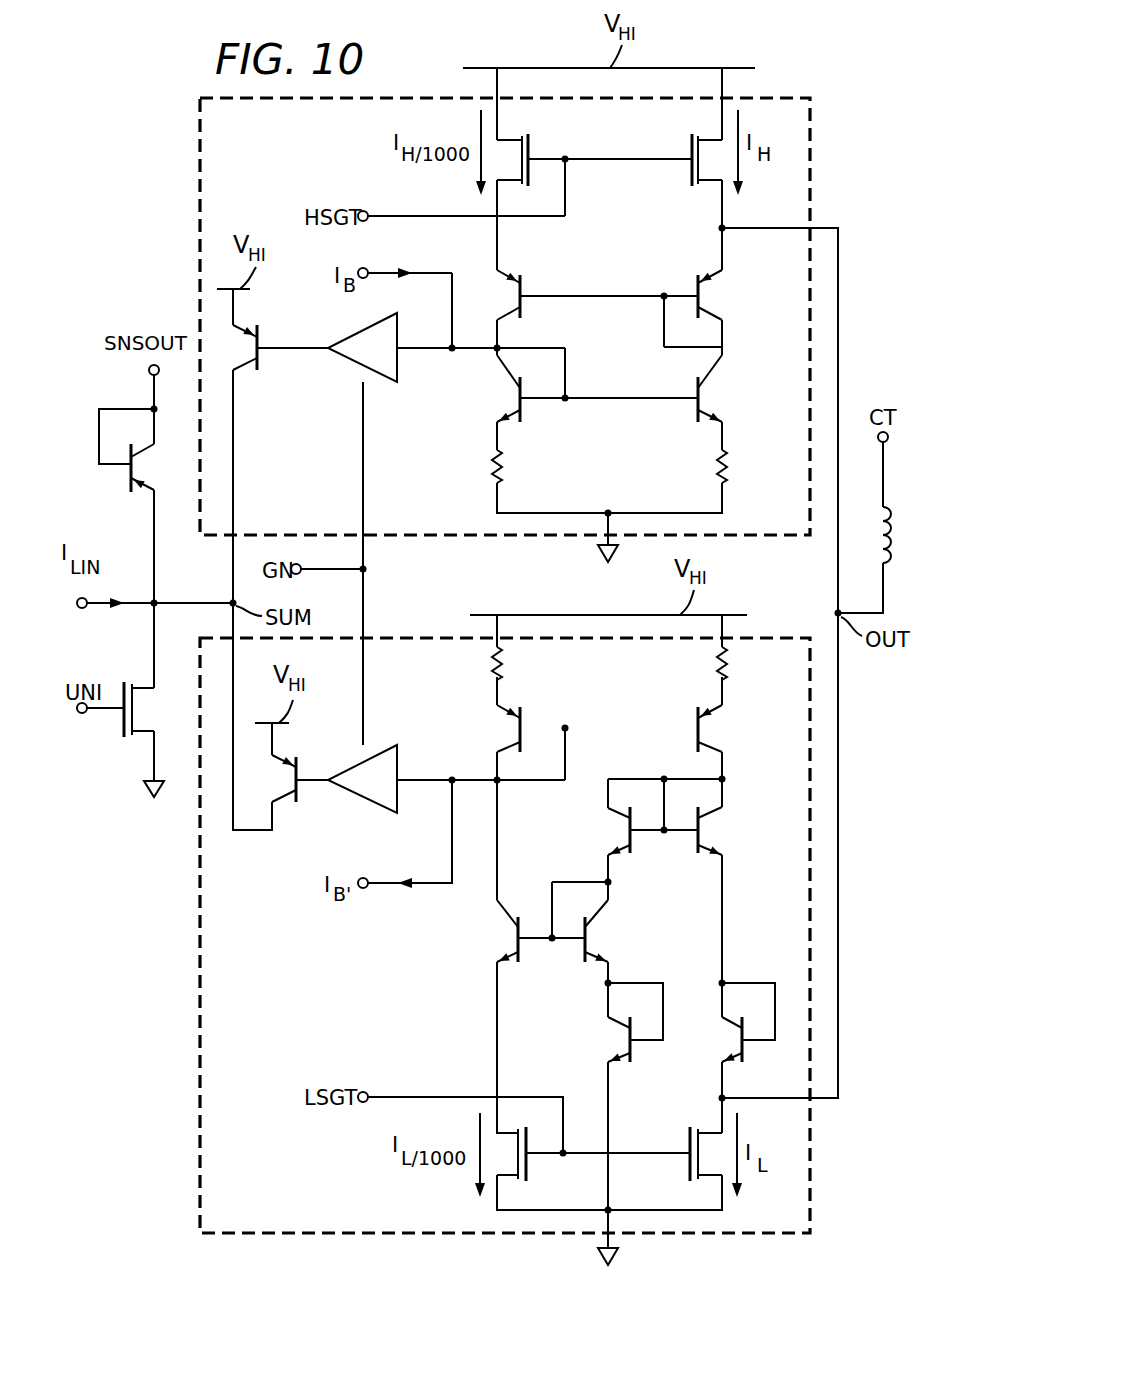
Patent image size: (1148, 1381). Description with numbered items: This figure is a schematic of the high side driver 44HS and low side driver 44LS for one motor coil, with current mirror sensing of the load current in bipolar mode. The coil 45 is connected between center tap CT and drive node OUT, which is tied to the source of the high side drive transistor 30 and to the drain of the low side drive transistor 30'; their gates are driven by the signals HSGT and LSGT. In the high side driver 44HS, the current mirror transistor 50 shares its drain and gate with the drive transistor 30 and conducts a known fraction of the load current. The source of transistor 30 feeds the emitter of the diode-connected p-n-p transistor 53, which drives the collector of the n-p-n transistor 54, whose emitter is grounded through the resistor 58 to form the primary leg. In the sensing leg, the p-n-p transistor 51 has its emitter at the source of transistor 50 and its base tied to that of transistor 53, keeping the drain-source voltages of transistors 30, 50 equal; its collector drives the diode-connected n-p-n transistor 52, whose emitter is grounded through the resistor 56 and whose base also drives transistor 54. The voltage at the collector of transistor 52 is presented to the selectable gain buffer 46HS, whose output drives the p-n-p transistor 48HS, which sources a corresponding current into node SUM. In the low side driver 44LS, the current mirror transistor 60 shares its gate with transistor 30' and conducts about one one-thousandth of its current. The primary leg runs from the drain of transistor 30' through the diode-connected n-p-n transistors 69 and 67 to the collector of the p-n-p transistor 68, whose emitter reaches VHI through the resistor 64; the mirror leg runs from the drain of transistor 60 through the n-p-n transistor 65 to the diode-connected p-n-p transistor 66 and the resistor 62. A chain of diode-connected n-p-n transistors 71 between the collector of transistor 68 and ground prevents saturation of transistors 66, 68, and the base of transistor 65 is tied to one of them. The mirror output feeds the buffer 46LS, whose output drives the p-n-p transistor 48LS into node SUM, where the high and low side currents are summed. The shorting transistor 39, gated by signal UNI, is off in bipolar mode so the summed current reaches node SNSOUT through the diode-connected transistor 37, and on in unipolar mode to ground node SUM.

The high side drive transistor 30 is at (643, 165).
The low side drive transistor 30' is at (630, 1149).
The diode-connected p-n-p transistor 37 is at (128, 480).
The transistor 39 is at (122, 730).
The high side driver 44HS is at (812, 142).
The low side driver 44LS is at (812, 1197).
The coil 45 is at (895, 527).
The selectable gain current mirror buffer 46HS is at (398, 360).
The selectable gain current buffer 46LS is at (398, 757).
The p-n-p transistor 48HS is at (262, 335).
The p-n-p transistor 48LS is at (300, 783).
The current mirror transistor 50 is at (530, 152).
The p-n-p transistor 51 is at (523, 303).
The n-p-n transistor 52 is at (523, 404).
The p-n-p transistor 53 is at (695, 285).
The n-p-n transistor 54 is at (695, 387).
The resistor 56 is at (495, 470).
The resistor 58 is at (718, 470).
The current mirror transistor 60 is at (529, 1165).
The resistor 62 is at (495, 662).
The resistor 64 is at (718, 662).
The n-p-n transistor 65 is at (523, 948).
The p-n-p transistor 66 is at (524, 714).
The n-p-n transistor 67 is at (703, 826).
The p-n-p transistor 68 is at (695, 718).
The n-p-n transistor 69 is at (748, 1053).
The n-p-n transistors 71 is at (636, 841).